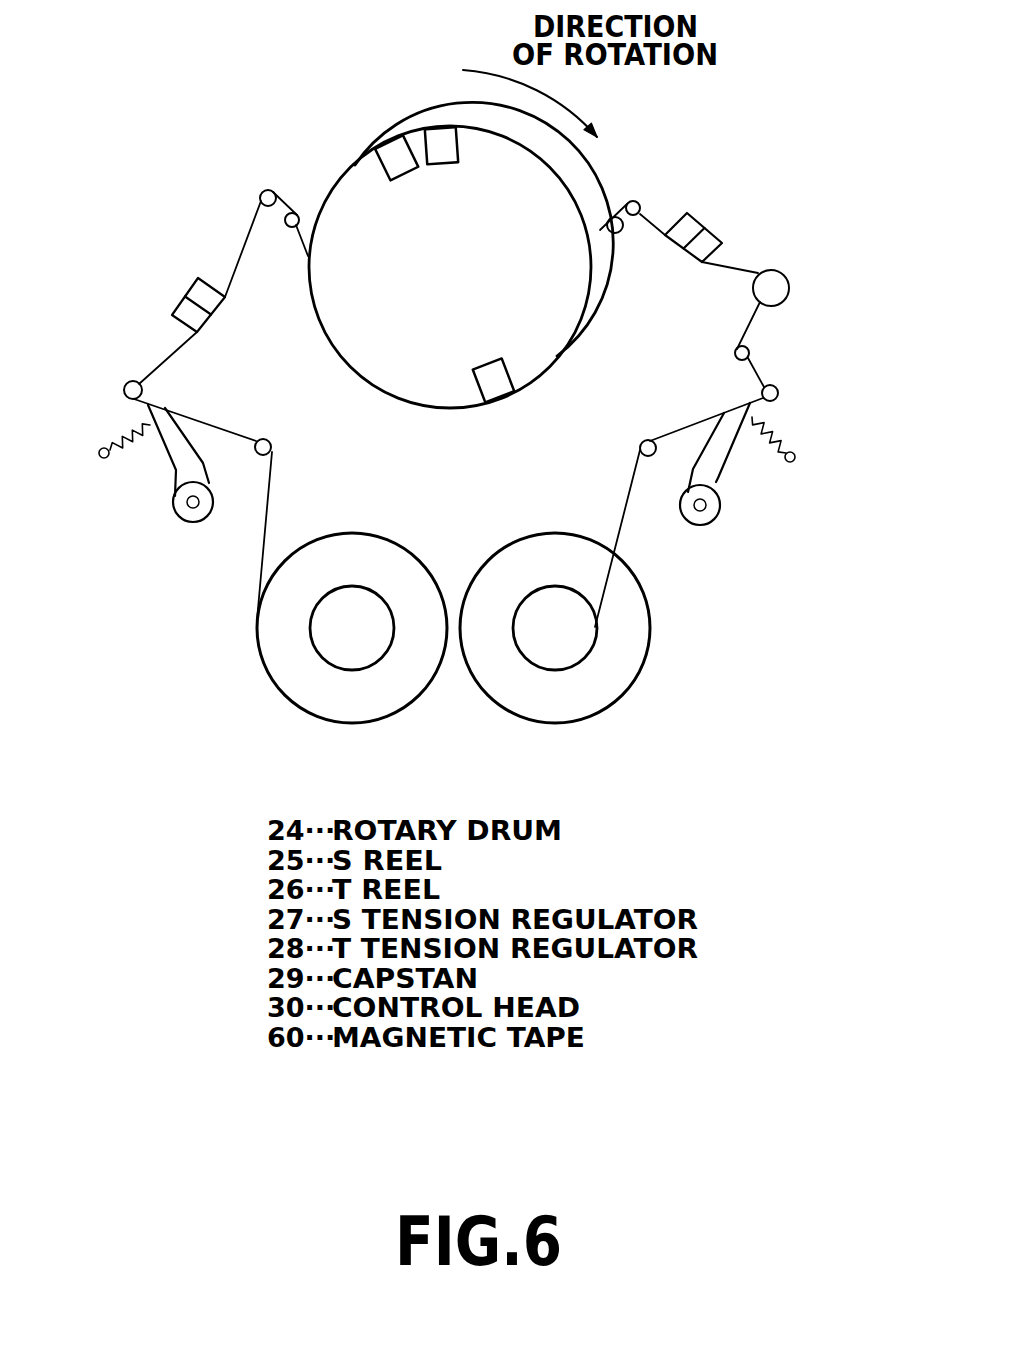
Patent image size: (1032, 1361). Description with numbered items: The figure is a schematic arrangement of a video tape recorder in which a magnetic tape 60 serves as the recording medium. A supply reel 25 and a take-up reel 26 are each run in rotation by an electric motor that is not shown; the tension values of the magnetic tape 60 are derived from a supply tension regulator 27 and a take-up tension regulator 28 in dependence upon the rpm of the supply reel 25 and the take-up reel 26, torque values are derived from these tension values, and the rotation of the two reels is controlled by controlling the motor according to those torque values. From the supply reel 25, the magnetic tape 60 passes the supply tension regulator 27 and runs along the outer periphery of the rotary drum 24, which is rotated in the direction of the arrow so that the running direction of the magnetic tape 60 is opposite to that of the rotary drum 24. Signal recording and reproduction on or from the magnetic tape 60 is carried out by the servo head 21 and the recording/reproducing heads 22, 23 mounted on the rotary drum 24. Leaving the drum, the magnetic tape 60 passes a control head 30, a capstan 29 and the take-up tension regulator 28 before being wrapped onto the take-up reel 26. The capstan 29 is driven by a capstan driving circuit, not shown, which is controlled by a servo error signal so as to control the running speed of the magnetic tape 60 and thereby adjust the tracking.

The servo head 21 is at (443, 140).
The recording/reproducing head 22 is at (497, 383).
The recording/reproducing head 23 is at (390, 143).
The rotary drum 24 is at (330, 187).
The supply reel 25 is at (280, 660).
The take-up reel 26 is at (627, 665).
The supply tension regulator 27 is at (183, 502).
The take-up tension regulator 28 is at (777, 390).
The capstan 29 is at (777, 278).
The control head 30 is at (703, 238).
The magnetic tape 60 is at (627, 525).